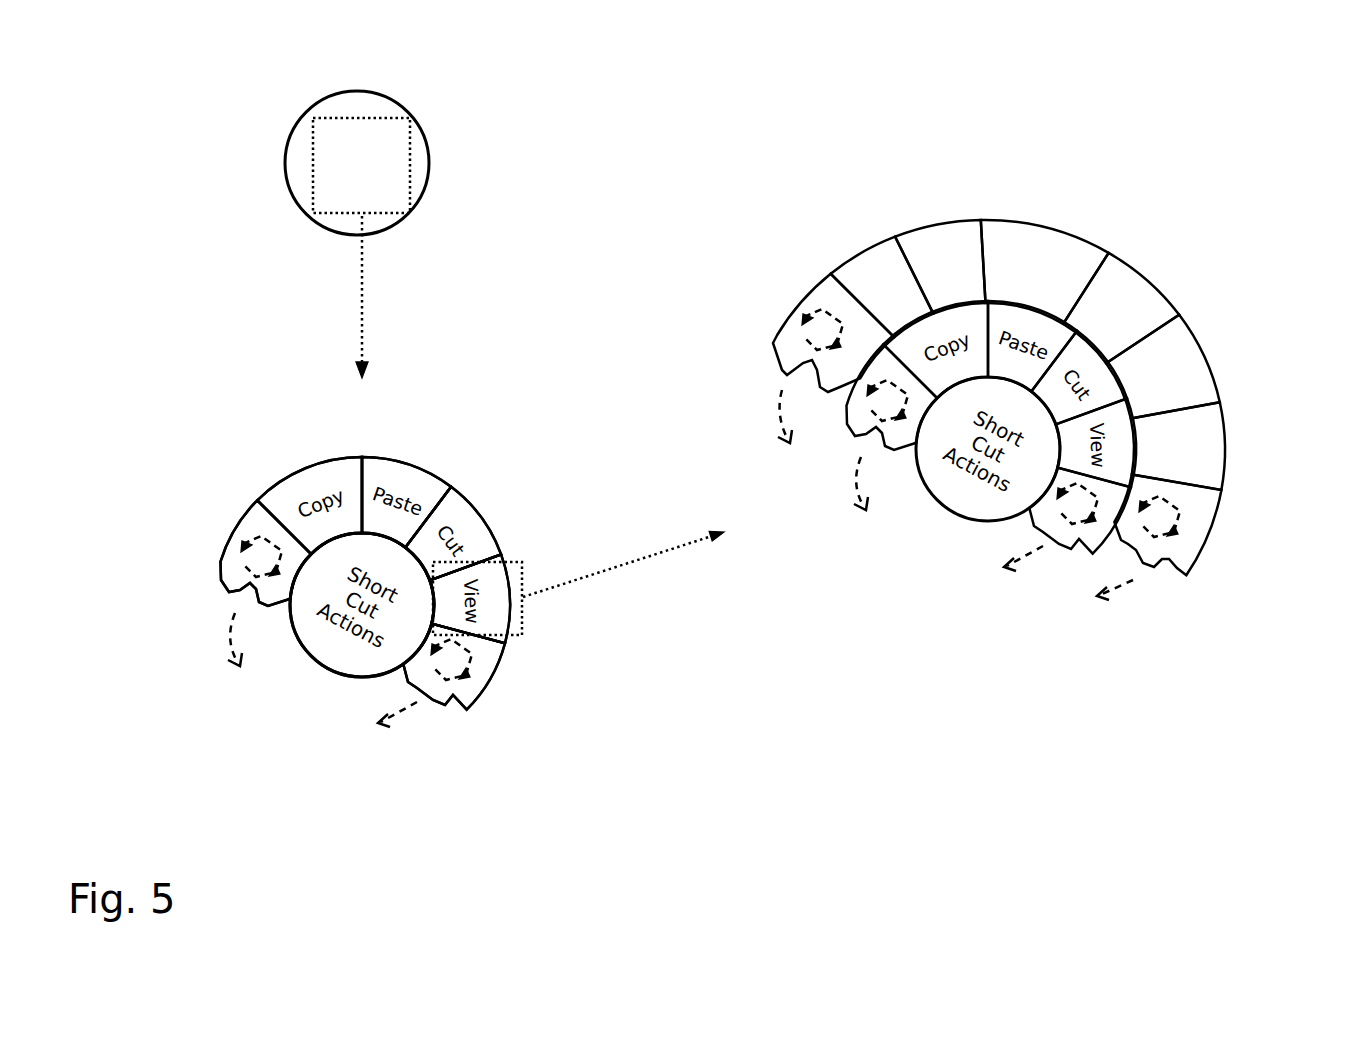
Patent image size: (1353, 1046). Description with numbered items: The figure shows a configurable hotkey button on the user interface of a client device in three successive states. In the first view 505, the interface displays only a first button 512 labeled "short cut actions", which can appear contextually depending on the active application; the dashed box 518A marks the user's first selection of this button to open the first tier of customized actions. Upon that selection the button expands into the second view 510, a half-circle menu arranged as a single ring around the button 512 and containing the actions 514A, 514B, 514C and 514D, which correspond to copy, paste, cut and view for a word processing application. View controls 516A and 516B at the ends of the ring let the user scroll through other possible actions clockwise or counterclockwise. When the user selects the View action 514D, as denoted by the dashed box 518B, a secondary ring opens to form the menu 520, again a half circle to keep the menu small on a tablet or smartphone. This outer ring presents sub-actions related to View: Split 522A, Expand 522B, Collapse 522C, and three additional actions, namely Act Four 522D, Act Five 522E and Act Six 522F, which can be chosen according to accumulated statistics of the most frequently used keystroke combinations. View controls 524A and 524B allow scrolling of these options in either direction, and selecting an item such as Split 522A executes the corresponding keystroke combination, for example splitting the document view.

The first view 505 is at (390, 35).
The second view 510 is at (405, 830).
The menu 520 is at (1027, 81).
The first button 512 is at (285, 157).
The action 514A is at (280, 468).
The action 514B is at (408, 460).
The action 514C is at (488, 512).
The action 514D is at (520, 638).
The view control 516A is at (237, 523).
The view control 516B is at (492, 687).
The dashed box 518A is at (410, 162).
The dashed box 518B is at (527, 563).
The Split 522A is at (1134, 272).
The Expand 522B is at (1186, 339).
The Collapse 522C is at (1050, 229).
The Act 4 522D is at (1223, 445).
The Act 5 522E is at (923, 219).
The Act 6 522F is at (857, 247).
The view control 524A is at (797, 300).
The view control 524B is at (1210, 535).